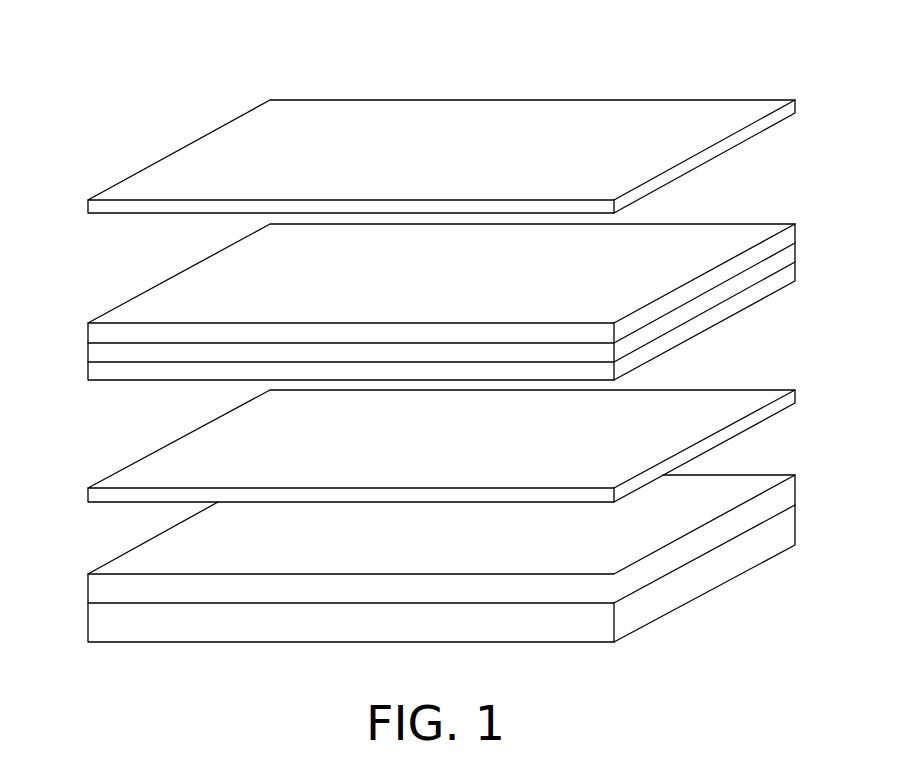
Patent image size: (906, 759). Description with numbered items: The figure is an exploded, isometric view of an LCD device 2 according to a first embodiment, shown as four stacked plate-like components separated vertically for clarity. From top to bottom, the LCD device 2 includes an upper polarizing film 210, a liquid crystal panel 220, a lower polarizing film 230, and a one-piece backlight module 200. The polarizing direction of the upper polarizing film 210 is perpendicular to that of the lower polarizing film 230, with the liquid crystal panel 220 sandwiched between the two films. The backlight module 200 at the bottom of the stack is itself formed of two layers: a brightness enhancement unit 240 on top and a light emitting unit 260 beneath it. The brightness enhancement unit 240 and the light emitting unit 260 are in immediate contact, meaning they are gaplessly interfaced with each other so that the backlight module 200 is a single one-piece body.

The LCD device 2 is at (343, 84).
The upper polarizing film 210 is at (665, 115).
The liquid crystal panel 220 is at (82, 313).
The lower polarizing film 230 is at (703, 403).
The one-piece backlight module 200 is at (422, 543).
The brightness enhancement unit 240 is at (733, 485).
The light emitting unit 260 is at (708, 573).